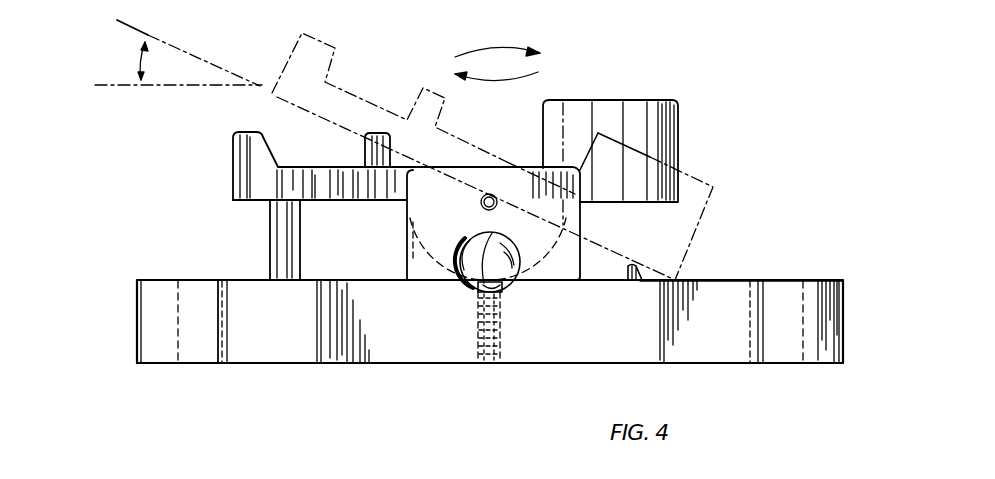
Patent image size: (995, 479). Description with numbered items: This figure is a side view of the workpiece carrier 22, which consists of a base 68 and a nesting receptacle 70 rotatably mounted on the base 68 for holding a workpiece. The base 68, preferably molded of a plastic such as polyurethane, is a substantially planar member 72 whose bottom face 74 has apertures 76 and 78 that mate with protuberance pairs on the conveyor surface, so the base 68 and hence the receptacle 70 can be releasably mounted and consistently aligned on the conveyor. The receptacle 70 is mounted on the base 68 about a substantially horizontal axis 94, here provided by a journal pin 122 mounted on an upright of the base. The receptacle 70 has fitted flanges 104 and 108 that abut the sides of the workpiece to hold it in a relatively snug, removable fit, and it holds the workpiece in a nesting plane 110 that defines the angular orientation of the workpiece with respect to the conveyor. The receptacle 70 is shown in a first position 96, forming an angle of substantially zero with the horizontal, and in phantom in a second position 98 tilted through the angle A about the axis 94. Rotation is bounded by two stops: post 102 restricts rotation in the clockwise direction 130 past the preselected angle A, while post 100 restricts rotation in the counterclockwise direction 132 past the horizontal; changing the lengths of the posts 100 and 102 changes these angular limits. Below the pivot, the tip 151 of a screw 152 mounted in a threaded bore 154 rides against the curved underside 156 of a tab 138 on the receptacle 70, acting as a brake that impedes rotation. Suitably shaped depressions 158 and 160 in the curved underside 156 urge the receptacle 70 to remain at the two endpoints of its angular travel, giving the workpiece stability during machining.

The angle A is at (148, 59).
The workpiece carrier 22 is at (393, 368).
The base 68 is at (741, 296).
The nesting receptacle 70 is at (246, 183).
The planar member 72 is at (567, 344).
The bottom face 74 is at (297, 368).
The aperture 76 is at (183, 367).
The aperture 78 is at (797, 365).
The horizontal axis 94 is at (492, 196).
The first position 96 is at (668, 100).
The second position 98 is at (693, 233).
The post 100 is at (284, 228).
The post 102 is at (633, 283).
The fitted flange 104 is at (259, 132).
The fitted flange 108 is at (609, 102).
The nesting plane 110 is at (330, 166).
The pin 122 is at (493, 225).
The clockwise direction 130 is at (497, 47).
The counterclockwise direction 132 is at (499, 70).
The tab 138 is at (408, 211).
The tip 151 is at (500, 282).
The screw 152 is at (486, 368).
The threaded bore 154 is at (476, 322).
The curved underside 156 is at (404, 251).
The depression 158 is at (456, 271).
The depression 160 is at (505, 246).